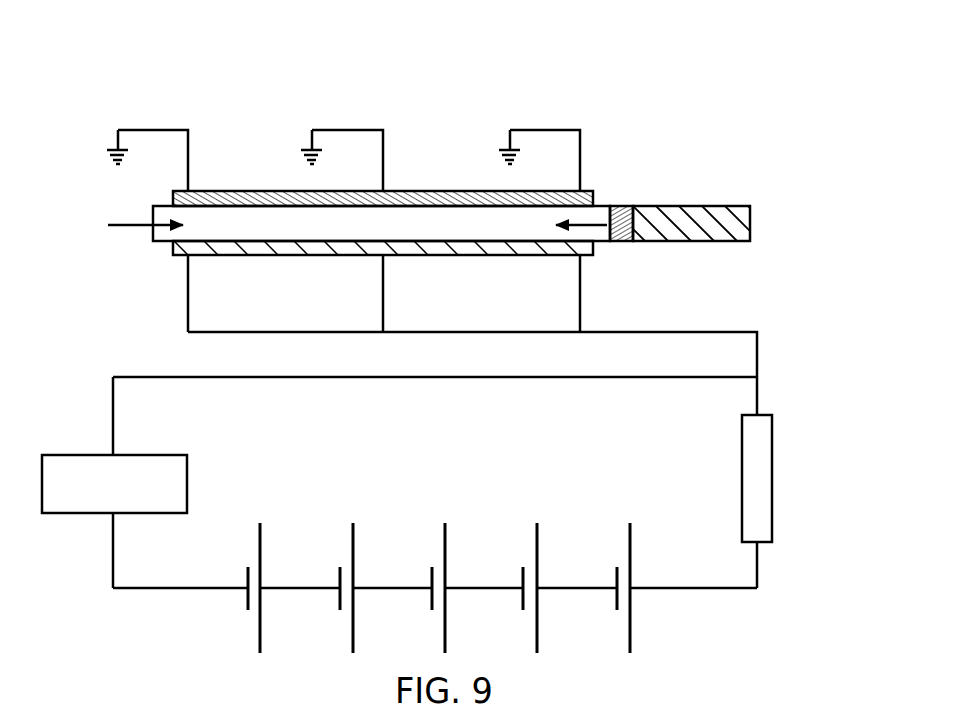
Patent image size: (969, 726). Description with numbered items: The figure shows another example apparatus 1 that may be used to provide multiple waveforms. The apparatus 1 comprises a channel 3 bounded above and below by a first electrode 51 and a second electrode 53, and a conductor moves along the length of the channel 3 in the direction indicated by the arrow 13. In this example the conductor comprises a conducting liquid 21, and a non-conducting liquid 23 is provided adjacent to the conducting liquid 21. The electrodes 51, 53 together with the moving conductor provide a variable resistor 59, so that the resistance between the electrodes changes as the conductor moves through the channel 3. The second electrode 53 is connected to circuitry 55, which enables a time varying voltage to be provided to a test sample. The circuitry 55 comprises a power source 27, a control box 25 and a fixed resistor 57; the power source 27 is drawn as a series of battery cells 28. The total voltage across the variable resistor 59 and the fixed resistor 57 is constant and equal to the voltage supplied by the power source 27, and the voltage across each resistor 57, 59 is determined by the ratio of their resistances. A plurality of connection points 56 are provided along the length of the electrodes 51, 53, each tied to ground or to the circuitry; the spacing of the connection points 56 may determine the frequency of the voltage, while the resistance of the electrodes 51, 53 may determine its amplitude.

The apparatus 1 is at (612, 102).
The channel 3 is at (134, 225).
The arrow 13 is at (577, 222).
The conducting liquid 21 is at (623, 195).
The non-conducting liquid 23 is at (720, 195).
The control box 25 is at (177, 492).
The power source 27 is at (435, 601).
The battery cell 28 is at (263, 605).
The first electrode 51 is at (472, 190).
The second electrode 53 is at (477, 260).
The circuitry 55 is at (776, 437).
The connection points 56 is at (188, 190).
The fixed resistor 57 is at (772, 478).
The variable resistor 59 is at (800, 225).